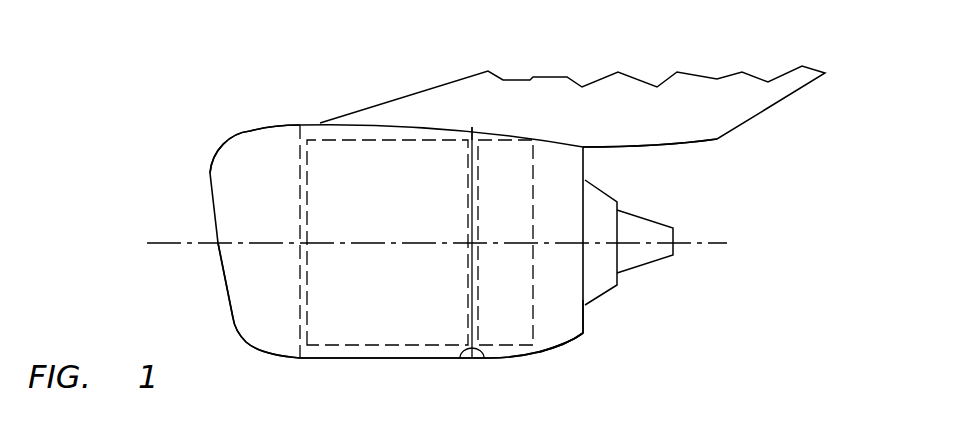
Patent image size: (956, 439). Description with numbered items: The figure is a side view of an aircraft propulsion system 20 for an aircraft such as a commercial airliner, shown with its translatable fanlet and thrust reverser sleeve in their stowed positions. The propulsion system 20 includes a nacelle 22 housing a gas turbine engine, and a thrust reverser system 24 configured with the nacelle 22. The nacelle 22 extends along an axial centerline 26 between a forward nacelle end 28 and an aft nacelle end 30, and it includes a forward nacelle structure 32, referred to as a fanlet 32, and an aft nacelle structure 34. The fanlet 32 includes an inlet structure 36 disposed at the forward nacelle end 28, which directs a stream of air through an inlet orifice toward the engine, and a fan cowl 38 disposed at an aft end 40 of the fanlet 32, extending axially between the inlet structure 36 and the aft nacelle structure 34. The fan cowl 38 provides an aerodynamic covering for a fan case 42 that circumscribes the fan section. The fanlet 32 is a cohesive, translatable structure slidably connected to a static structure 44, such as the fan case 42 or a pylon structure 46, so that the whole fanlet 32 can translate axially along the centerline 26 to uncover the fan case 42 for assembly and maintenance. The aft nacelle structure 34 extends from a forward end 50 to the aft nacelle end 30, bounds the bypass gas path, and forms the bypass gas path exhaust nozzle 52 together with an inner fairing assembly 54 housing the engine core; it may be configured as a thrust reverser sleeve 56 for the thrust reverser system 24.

The aircraft propulsion system 20 is at (225, 115).
The nacelle 22 is at (320, 120).
The thrust reverser system 24 is at (503, 355).
The axial centerline 26 is at (705, 243).
The forward nacelle end 28 is at (210, 172).
The aft nacelle end 30 is at (585, 162).
The forward nacelle structure (fanlet) 32 is at (307, 362).
The aft nacelle structure 34 is at (548, 354).
The inlet structure 36 is at (250, 347).
The fan cowl 38 is at (388, 358).
The aft end of the fanlet 40 is at (480, 350).
The fan case 42 is at (342, 345).
The static structure 44 is at (425, 95).
The pylon structure 46 is at (473, 120).
The forward end of the aft nacelle structure 50 is at (462, 352).
The bypass gas path exhaust nozzle 52 is at (592, 320).
The inner fairing assembly 54 is at (603, 297).
The thrust reverser sleeve 56 is at (565, 342).